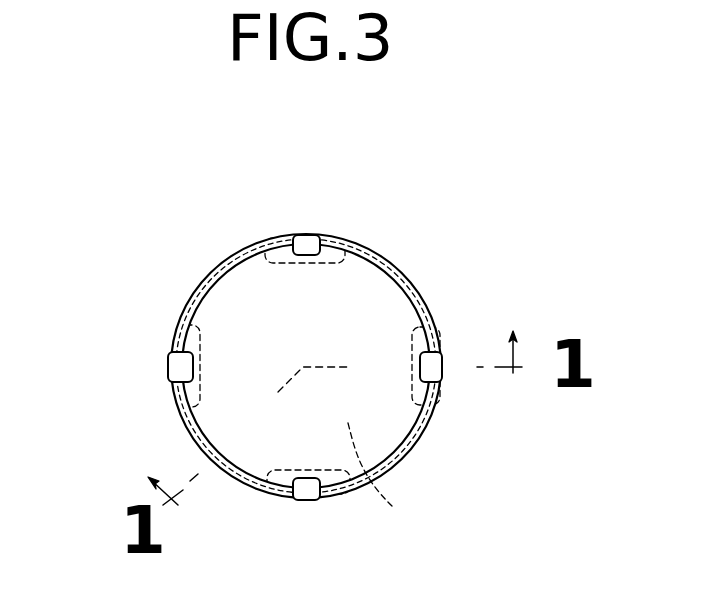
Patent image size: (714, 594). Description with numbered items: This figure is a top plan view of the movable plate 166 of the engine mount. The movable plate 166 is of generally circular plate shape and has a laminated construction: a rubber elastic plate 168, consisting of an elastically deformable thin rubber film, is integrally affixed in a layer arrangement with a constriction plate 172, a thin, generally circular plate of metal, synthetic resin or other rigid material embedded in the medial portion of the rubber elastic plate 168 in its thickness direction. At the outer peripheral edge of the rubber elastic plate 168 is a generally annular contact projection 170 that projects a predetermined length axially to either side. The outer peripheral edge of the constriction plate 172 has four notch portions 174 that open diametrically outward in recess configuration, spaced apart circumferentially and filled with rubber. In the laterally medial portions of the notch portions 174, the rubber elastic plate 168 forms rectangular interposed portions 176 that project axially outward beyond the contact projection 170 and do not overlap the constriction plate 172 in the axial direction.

The movable plate 166 is at (208, 253).
The rubber elastic plate 168 is at (367, 317).
The contact projection 170 is at (403, 458).
The constriction plate 172 is at (383, 478).
The notch portions 174 is at (330, 260).
The interposed portions 176 is at (303, 242).